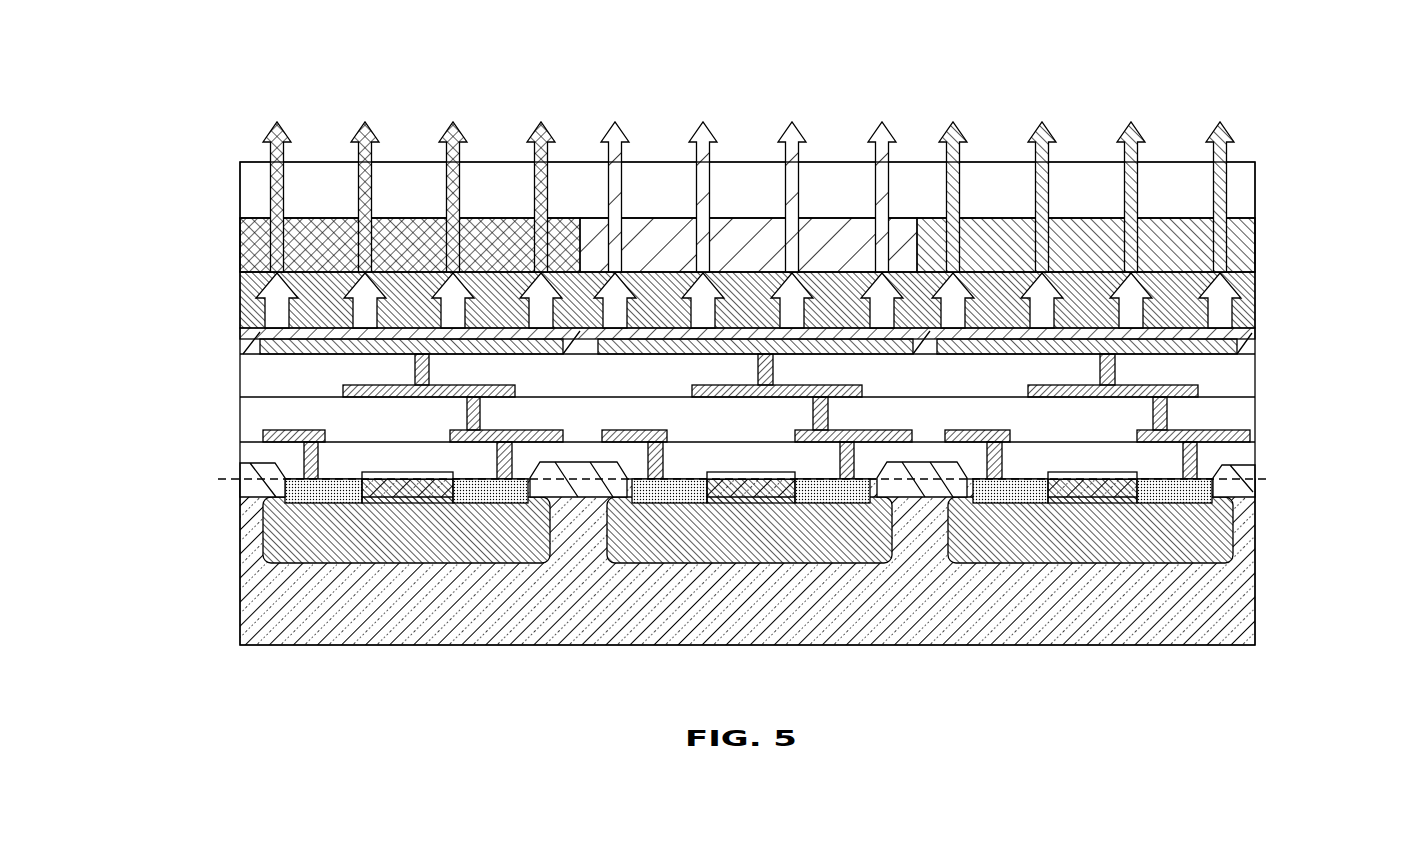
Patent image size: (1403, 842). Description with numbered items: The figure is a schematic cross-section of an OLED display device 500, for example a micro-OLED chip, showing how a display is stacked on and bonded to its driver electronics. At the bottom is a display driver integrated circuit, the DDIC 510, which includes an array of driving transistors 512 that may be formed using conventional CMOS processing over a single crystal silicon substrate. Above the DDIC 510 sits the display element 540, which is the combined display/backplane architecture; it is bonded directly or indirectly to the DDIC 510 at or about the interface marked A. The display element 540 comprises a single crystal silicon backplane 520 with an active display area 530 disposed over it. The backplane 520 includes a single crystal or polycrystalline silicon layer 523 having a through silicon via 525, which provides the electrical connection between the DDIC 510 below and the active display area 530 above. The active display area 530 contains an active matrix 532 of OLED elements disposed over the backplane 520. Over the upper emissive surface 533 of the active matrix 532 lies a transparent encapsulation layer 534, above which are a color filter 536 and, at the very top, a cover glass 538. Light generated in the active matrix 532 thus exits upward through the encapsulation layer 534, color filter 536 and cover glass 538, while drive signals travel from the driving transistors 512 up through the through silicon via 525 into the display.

The OLED display device 500 is at (162, 66).
The display element 540 is at (149, 167).
The active display area 530 is at (219, 162).
The backplane 520 is at (219, 352).
The display driver integrated circuit (DDIC) 510 is at (219, 479).
The cover glass 538 is at (1240, 203).
The color filter 536 is at (1255, 242).
The transparent encapsulation layer 534 is at (1228, 279).
The upper emissive surface 533 is at (1238, 343).
The active matrix 532 is at (1245, 347).
The through silicon via 525 is at (1197, 391).
The silicon layer 523 is at (1230, 415).
The driving transistors 512 is at (1233, 545).